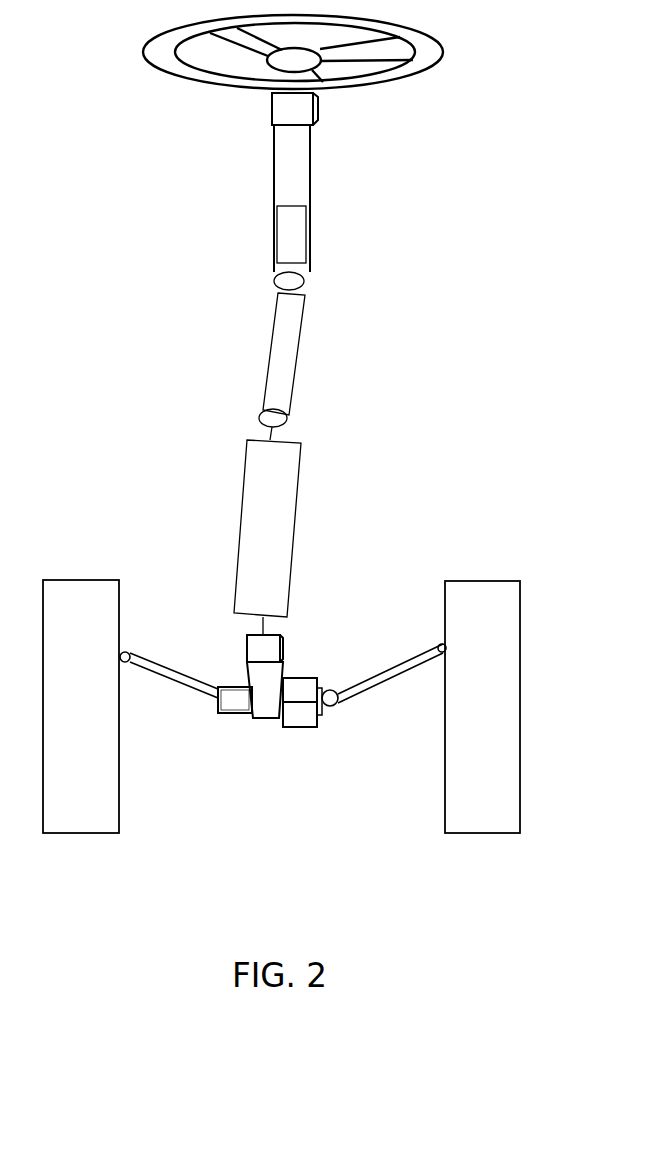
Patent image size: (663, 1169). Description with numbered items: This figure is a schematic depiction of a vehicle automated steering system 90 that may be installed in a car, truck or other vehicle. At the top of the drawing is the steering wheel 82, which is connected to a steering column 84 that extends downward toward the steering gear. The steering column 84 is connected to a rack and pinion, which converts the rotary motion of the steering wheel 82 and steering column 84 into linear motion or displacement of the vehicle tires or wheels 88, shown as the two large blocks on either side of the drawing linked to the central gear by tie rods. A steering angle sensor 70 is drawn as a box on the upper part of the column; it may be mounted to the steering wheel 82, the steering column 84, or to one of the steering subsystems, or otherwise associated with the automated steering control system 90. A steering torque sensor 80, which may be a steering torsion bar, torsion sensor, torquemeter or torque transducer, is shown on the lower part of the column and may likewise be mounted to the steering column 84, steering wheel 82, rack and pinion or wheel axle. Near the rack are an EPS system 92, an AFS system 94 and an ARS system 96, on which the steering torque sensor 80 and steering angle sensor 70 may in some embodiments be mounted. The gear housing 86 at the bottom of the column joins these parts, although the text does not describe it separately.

The steering wheel 82 is at (428, 70).
The vehicle automated steering system 90 is at (446, 250).
The steering angle sensor 70 is at (279, 240).
The steering column 84 is at (298, 366).
The steering torque sensor 80 is at (246, 650).
The steering gear housing 86 is at (250, 718).
The ARS system 96 is at (228, 687).
The AFS system 94 is at (308, 683).
The EPS system 92 is at (298, 720).
The vehicle wheels 88 is at (520, 690).